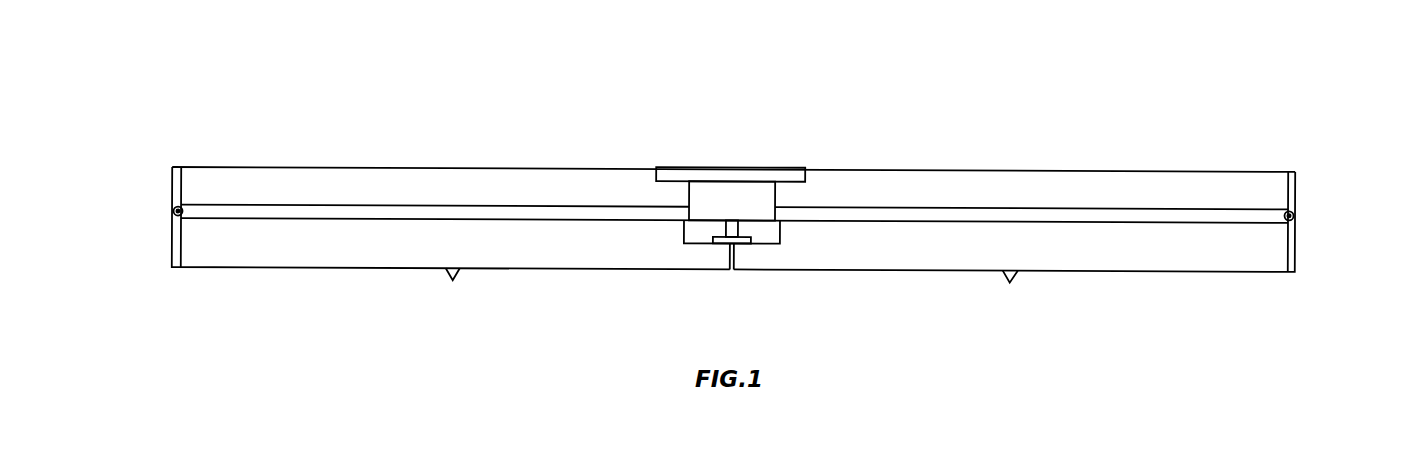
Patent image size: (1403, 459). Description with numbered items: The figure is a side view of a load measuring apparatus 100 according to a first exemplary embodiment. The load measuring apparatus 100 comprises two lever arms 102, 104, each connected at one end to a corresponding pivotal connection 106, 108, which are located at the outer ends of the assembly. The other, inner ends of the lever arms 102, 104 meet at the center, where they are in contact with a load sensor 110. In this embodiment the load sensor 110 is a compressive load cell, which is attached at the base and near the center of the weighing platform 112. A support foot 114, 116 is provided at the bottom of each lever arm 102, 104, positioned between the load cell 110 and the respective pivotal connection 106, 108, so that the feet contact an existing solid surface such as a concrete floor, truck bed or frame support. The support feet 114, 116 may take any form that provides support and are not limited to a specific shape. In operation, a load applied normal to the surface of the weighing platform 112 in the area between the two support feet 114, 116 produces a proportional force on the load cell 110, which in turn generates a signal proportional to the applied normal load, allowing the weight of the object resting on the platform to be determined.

The load measuring apparatus 100 is at (1232, 93).
The lever arm 102 is at (269, 244).
The lever arm 104 is at (1207, 250).
The pivotal connection 106 is at (173, 211).
The pivotal connection 108 is at (1294, 211).
The load sensor 110 is at (750, 198).
The weighing platform 112 is at (1238, 193).
The support foot 114 is at (453, 279).
The support foot 116 is at (1010, 279).